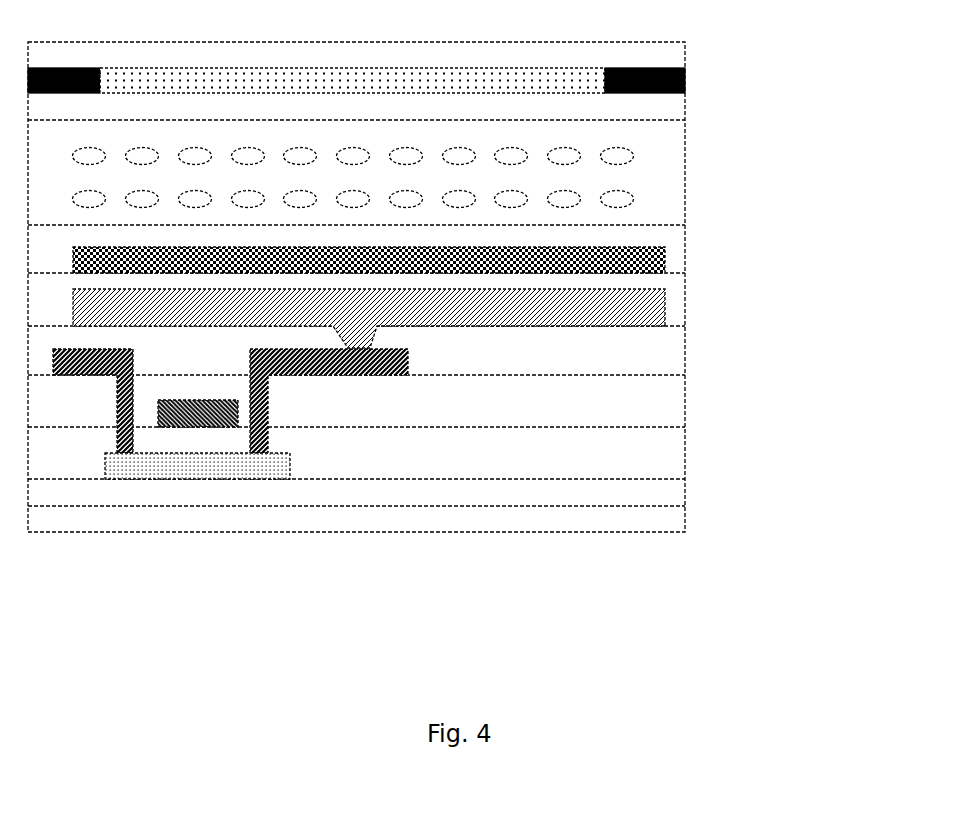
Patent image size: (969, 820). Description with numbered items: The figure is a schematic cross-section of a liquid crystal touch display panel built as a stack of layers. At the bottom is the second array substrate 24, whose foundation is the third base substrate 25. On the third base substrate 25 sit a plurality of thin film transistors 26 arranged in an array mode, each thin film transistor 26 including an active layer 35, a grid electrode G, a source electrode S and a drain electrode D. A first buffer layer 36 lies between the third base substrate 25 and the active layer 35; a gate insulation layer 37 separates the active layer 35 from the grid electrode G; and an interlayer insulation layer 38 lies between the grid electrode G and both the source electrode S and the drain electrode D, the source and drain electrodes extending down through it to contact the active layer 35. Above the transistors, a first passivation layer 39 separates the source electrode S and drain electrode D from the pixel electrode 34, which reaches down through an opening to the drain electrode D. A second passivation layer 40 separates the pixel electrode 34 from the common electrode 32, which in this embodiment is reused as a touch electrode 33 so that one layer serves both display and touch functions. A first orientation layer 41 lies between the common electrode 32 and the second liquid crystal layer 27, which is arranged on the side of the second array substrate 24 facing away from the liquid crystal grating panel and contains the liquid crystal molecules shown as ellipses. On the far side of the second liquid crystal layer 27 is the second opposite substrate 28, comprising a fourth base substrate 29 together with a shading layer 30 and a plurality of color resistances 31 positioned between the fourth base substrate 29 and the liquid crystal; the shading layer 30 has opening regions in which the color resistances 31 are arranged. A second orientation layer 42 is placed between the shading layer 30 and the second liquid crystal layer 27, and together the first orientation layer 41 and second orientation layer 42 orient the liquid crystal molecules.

The second array substrate 24 is at (792, 530).
The third base substrate 25 is at (635, 518).
The thin film transistor 26 is at (250, 600).
The second liquid crystal layer 27 is at (758, 118).
The second opposite substrate 28 is at (652, 173).
The fourth base substrate 29 is at (652, 47).
The shading layer 30 is at (645, 73).
The color resistance 31 is at (645, 90).
The common electrode 32 is at (369, 260).
The touch electrode 33 is at (369, 260).
The pixel electrode 34 is at (665, 308).
The active layer 35 is at (163, 465).
The first buffer layer 36 is at (665, 493).
The gate insulation layer 37 is at (653, 467).
The interlayer insulation layer 38 is at (643, 393).
The first passivation layer 39 is at (404, 474).
The second passivation layer 40 is at (672, 277).
The first orientation layer 41 is at (667, 235).
The second orientation layer 42 is at (652, 113).
The source electrode S is at (97, 375).
The grid electrode G is at (197, 427).
The drain electrode D is at (303, 375).